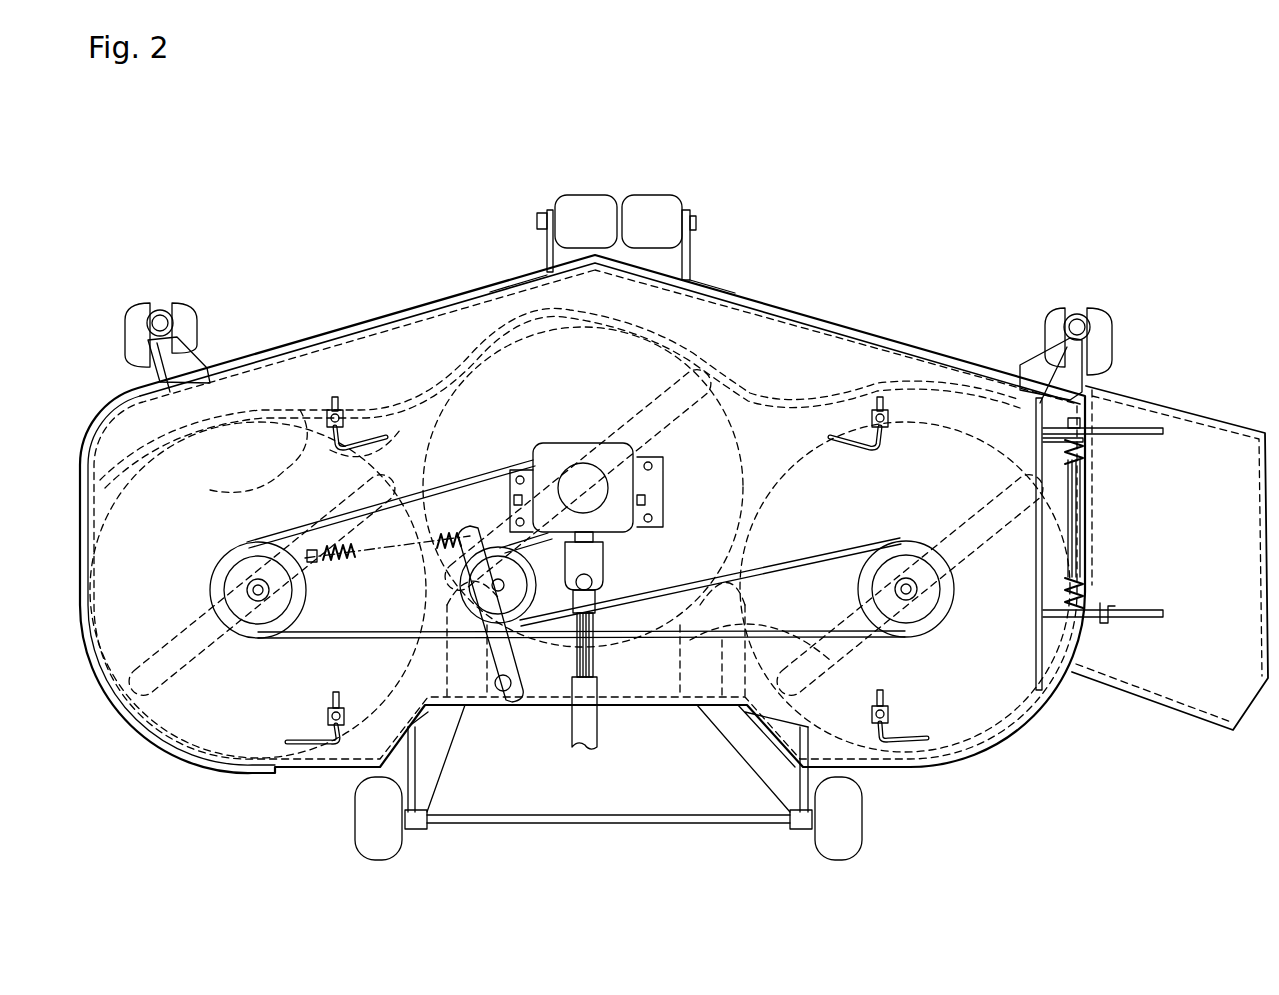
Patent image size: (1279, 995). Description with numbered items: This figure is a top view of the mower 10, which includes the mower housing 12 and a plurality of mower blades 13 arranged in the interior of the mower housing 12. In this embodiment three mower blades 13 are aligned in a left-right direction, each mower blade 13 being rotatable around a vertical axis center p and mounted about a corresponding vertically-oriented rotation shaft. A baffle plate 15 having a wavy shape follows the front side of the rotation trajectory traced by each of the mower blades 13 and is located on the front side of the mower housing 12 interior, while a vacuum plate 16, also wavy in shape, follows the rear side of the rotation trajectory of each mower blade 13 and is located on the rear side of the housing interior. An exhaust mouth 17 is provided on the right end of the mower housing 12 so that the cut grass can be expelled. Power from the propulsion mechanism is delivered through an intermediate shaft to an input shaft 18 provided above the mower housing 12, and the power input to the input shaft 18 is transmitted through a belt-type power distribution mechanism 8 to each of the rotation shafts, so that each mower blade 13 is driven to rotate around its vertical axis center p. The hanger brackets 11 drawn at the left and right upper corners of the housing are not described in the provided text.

The belt-type power distribution mechanism 8 is at (783, 560).
The mower 10 is at (350, 291).
The hanger bracket 11 is at (137, 318).
The mower housing 12 is at (808, 347).
The mower blade 13 is at (690, 425).
The baffle plate 15 is at (470, 372).
The vacuum plate 16 is at (397, 692).
The exhaust mouth 17 is at (1095, 517).
The input shaft 18 is at (605, 548).
The vertical axis center p is at (563, 462).